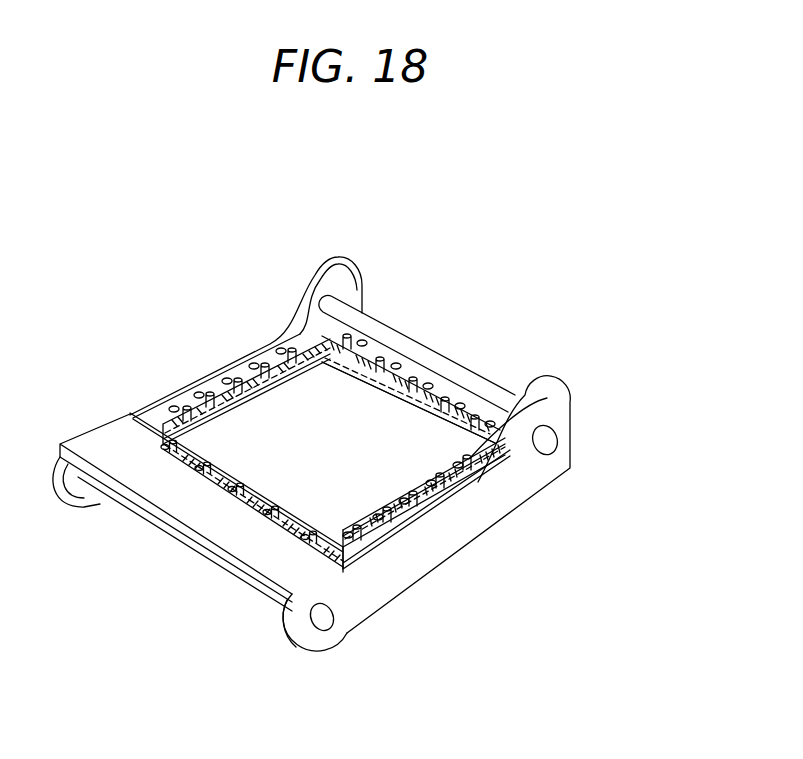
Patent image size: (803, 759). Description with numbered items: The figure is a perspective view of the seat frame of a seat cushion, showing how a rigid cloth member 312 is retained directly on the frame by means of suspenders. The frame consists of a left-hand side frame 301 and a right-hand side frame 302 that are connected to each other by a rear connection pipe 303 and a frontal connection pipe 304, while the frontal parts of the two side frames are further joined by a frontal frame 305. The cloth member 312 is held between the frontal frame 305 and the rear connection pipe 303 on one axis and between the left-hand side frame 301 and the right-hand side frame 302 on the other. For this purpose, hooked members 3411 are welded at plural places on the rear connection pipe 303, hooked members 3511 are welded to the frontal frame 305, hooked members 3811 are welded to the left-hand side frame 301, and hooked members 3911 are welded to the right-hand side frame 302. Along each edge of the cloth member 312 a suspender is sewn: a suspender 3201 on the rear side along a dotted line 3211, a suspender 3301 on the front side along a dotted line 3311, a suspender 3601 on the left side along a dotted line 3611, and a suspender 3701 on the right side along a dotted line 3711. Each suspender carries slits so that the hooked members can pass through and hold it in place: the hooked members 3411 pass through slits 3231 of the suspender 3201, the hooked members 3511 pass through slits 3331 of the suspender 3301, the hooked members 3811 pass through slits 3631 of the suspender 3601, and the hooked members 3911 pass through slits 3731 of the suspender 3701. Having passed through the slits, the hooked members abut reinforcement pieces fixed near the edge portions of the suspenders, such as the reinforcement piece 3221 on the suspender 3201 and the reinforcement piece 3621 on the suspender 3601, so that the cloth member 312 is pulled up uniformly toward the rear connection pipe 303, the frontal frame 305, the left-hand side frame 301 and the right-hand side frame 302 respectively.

The left-hand side frame 301 is at (330, 253).
The right-hand side frame 302 is at (572, 398).
The rear connection pipe 303 is at (365, 310).
The frontal connection pipe 304 is at (321, 620).
The frontal frame 305 is at (240, 537).
The rigid cloth member 312 is at (328, 490).
The suspender 3201 is at (496, 432).
The line 3211 is at (462, 408).
The reinforcement piece 3221 is at (410, 375).
The slits 3231 is at (480, 418).
The suspender 3301 is at (280, 560).
The line 3311 is at (192, 510).
The slits 3331 is at (145, 505).
The hooked members 3411 is at (383, 360).
The hooked members 3511 is at (295, 600).
The suspender 3601 is at (292, 350).
The line 3611 is at (240, 378).
The reinforcement piece 3621 is at (160, 420).
The slits 3631 is at (165, 420).
The suspender 3701 is at (452, 480).
The line 3711 is at (378, 530).
The slits 3731 is at (480, 465).
The hooked members 3811 is at (237, 375).
The hooked members 3911 is at (410, 505).